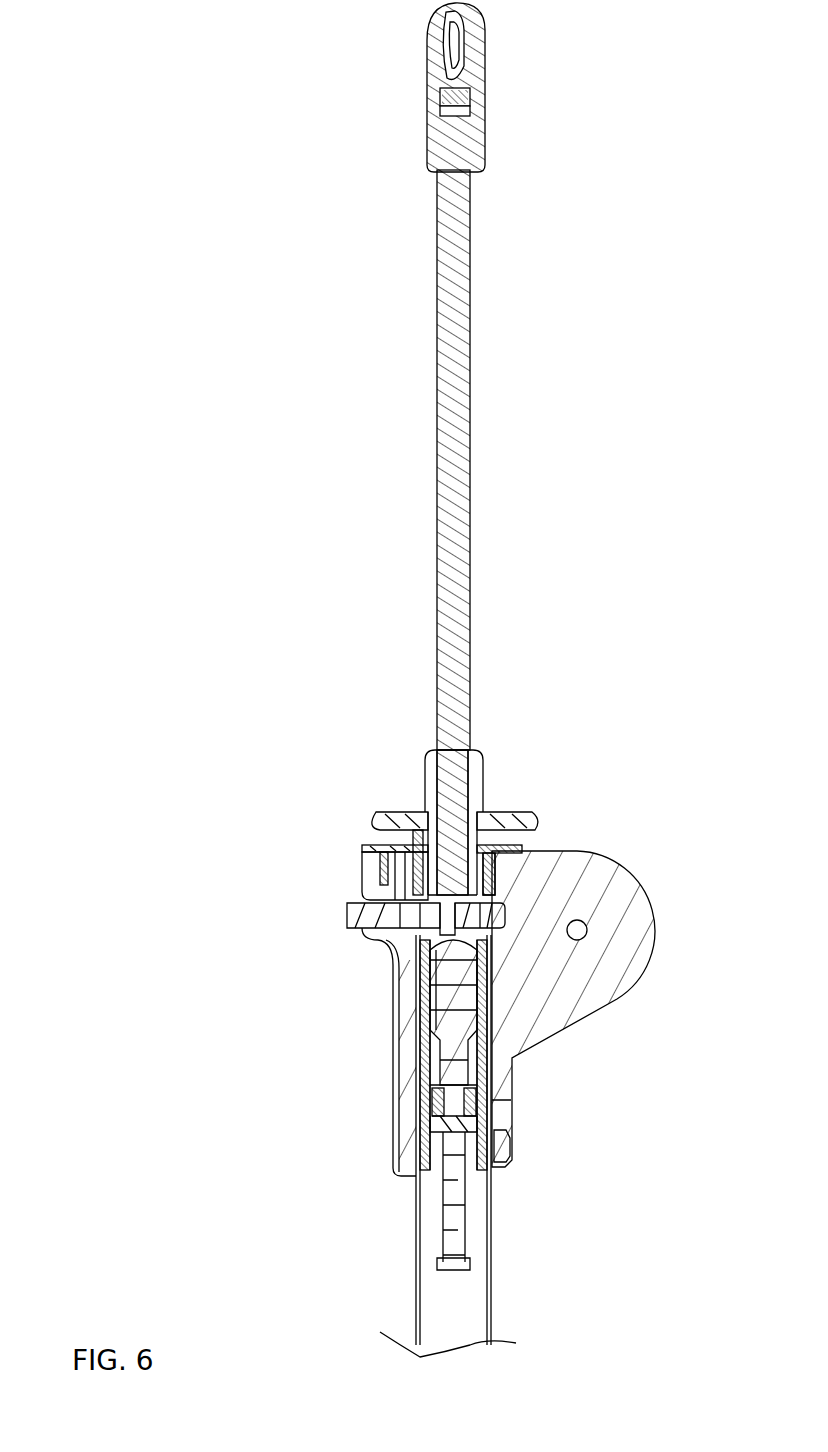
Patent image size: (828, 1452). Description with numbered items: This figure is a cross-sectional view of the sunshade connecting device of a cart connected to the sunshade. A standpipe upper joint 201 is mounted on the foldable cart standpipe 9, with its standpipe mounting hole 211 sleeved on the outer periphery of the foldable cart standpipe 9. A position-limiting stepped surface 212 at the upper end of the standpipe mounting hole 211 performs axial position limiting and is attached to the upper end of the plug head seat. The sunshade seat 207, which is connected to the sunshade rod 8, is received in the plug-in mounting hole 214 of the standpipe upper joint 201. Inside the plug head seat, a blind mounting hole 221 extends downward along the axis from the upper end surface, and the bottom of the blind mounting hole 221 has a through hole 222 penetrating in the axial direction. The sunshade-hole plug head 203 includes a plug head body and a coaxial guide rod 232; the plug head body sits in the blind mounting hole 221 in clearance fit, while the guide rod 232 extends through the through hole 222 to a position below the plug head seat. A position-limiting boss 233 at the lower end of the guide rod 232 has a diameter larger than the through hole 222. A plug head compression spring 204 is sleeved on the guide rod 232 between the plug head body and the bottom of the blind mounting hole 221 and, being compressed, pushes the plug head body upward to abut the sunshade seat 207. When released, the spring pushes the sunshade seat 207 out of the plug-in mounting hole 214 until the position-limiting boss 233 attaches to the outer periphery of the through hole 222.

The sunshade rod 8 is at (467, 495).
The foldable cart standpipe 9 is at (491, 1310).
The standpipe upper joint 201 is at (500, 1085).
The sunshade-hole plug head 203 is at (405, 1078).
The plug head compression spring 204 is at (405, 1125).
The sunshade seat 207 is at (483, 793).
The standpipe mounting hole 211 is at (432, 1020).
The position-limiting stepped surface 212 is at (390, 965).
The plug-in mounting hole 214 is at (420, 856).
The blind mounting hole 221 is at (484, 1025).
The through hole 222 is at (508, 1140).
The guide rod 232 is at (450, 1195).
The position-limiting boss 233 is at (470, 1262).